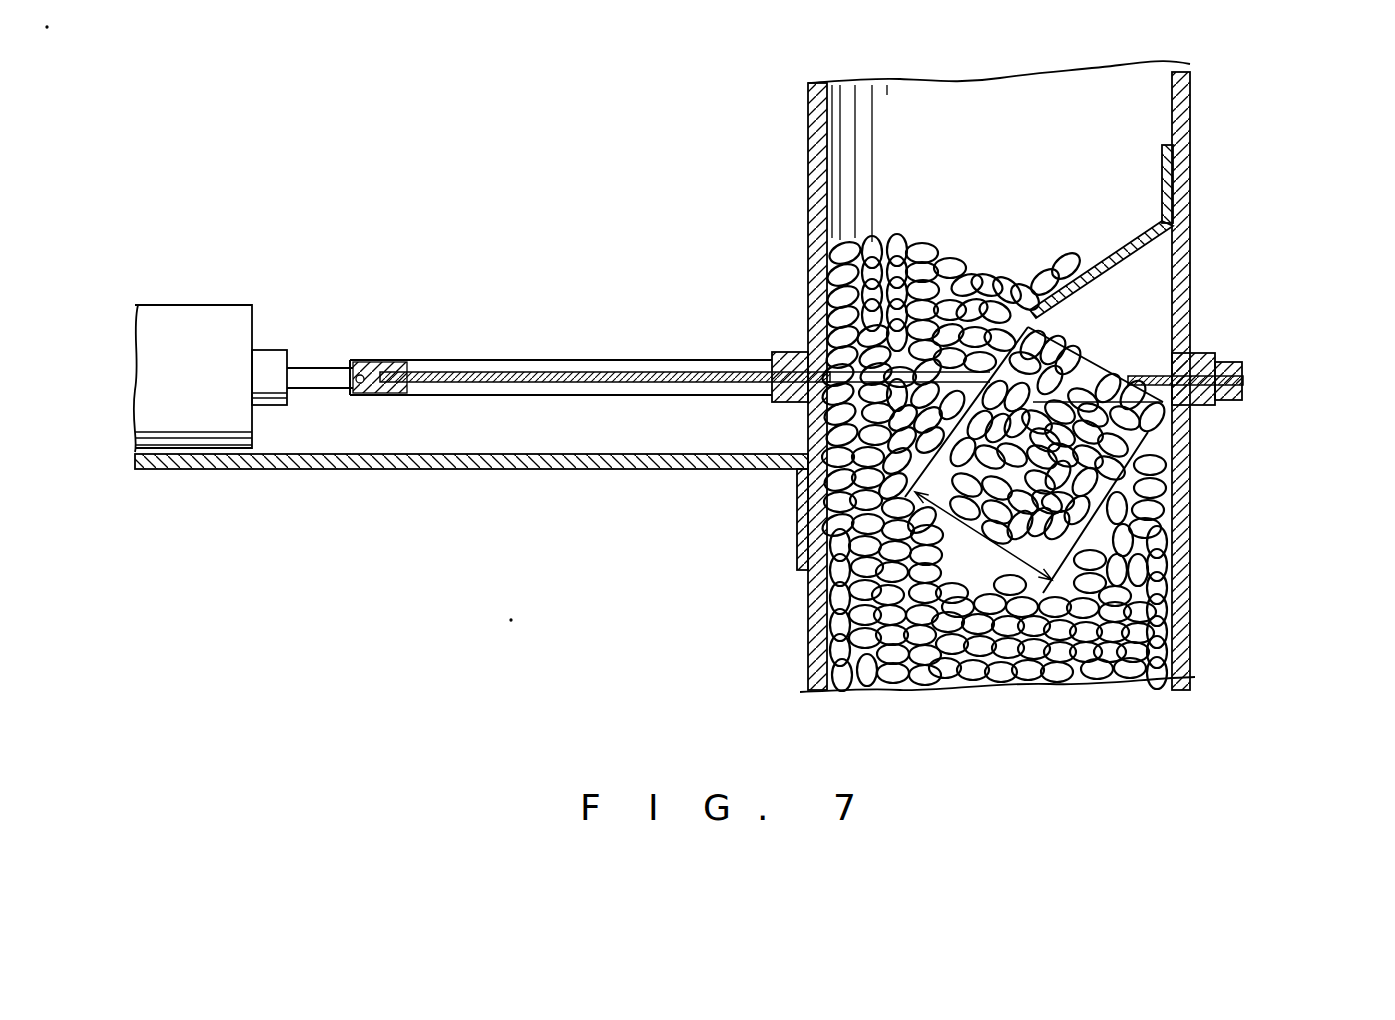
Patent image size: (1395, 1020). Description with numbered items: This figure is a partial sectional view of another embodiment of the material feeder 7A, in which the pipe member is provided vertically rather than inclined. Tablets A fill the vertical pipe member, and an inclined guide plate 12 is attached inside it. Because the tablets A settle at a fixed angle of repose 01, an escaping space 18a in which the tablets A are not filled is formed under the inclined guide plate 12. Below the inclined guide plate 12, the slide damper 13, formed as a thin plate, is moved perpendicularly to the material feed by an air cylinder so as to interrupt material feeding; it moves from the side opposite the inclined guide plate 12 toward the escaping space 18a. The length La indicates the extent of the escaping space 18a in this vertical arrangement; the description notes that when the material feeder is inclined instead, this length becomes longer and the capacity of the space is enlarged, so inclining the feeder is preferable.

The raw material supply section 7A is at (1257, 168).
The tablets A is at (948, 257).
The inclined guide plate 12 is at (1116, 256).
The slide damper 13 is at (700, 370).
The escaping space 18a is at (1157, 297).
The angle of repose 01 is at (1081, 395).
The length La is at (983, 538).